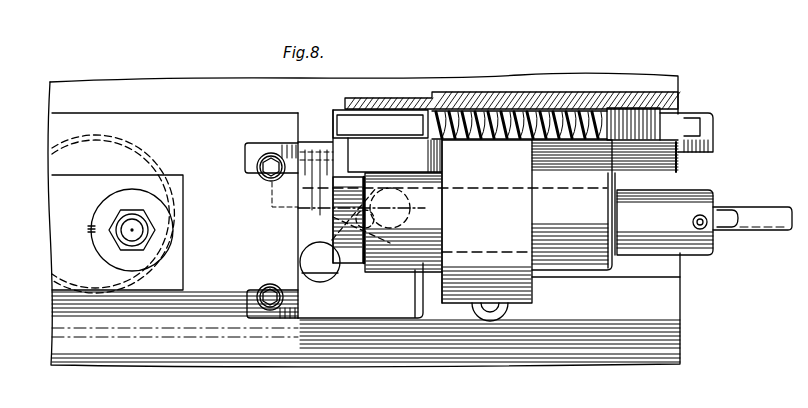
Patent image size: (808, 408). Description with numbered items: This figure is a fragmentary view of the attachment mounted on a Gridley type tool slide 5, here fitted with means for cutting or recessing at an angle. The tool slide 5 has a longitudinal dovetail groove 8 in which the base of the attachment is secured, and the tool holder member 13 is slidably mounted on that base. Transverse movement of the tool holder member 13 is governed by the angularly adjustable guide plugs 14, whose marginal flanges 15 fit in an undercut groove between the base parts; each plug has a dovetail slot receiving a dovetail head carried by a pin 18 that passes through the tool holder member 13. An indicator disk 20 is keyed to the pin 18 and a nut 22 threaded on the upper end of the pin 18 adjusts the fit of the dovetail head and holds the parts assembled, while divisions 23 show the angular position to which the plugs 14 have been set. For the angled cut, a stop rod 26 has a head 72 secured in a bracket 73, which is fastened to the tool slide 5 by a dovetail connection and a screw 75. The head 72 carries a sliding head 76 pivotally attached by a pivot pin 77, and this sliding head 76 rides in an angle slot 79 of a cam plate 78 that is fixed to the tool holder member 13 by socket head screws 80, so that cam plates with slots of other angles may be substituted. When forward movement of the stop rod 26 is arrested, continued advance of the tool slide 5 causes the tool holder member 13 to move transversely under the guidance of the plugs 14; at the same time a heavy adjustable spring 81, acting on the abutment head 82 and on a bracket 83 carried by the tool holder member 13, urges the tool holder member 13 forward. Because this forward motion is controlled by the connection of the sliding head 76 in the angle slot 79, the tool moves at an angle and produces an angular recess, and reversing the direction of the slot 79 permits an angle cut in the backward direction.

The tool slide 5 is at (680, 305).
The dovetail groove 8 is at (680, 272).
The tool holder member 13 is at (183, 113).
The guide plugs 14 is at (122, 158).
The marginal flanges 15 is at (105, 144).
The pin 18 is at (122, 237).
The indicator disk 20 is at (116, 200).
The nut 22 is at (156, 224).
The divisions 23 is at (90, 229).
The stop rod 26 is at (766, 207).
The head 72 is at (686, 196).
The bracket 73 is at (533, 298).
The screw 75 is at (500, 306).
The sliding head 76 is at (342, 242).
The pivot pin 77 is at (432, 213).
The cam plate 78 is at (309, 146).
The angle slot 79 is at (333, 225).
The socket head screws 80 is at (265, 181).
The adjustable spring 81 is at (549, 98).
The abutment head 82 is at (376, 118).
The bracket 83 is at (301, 125).